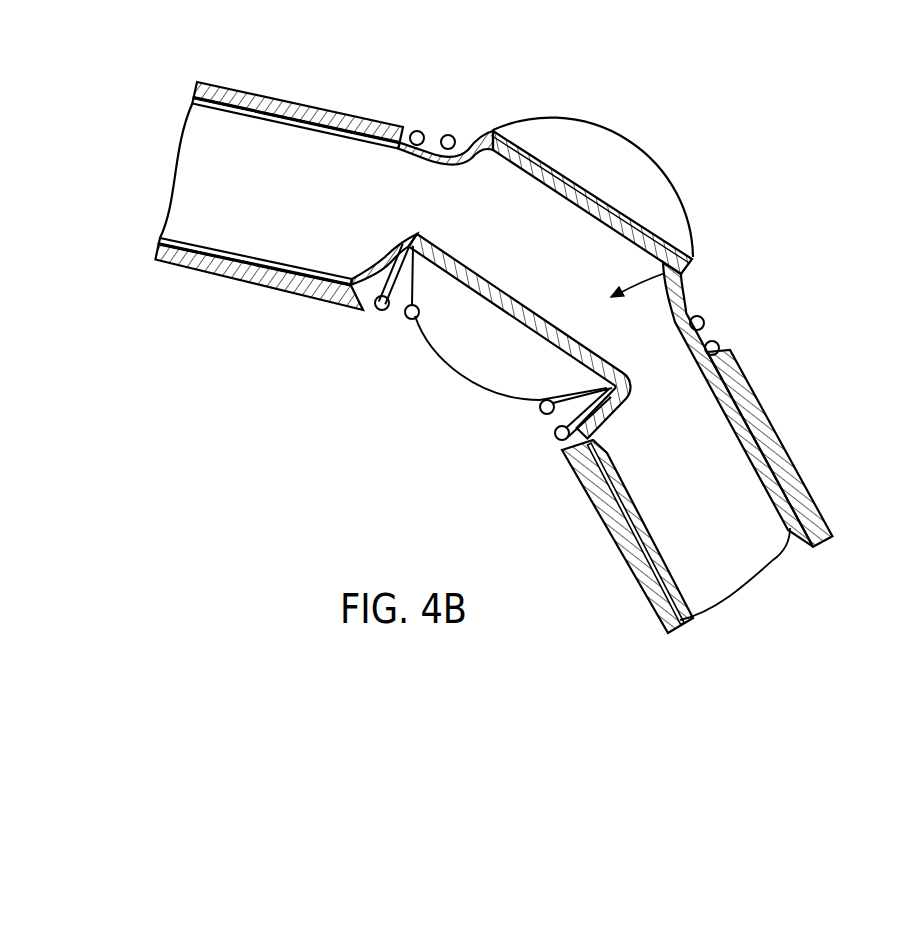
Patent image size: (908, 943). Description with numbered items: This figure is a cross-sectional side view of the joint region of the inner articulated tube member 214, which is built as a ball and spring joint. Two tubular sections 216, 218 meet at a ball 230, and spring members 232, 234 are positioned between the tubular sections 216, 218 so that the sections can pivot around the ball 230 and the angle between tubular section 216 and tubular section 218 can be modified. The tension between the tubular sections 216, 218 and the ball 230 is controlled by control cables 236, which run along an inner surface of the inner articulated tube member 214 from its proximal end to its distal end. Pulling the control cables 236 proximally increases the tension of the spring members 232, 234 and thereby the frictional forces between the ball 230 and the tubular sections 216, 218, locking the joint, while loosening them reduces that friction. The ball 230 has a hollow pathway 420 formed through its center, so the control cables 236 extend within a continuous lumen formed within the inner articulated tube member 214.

The inner articulated tube member 214 is at (759, 142).
The tubular section 216 is at (291, 101).
The tubular section 218 is at (780, 443).
The ball 230 is at (630, 138).
The spring member 232 is at (425, 127).
The spring member 234 is at (705, 318).
The control cables 236 is at (680, 592).
The hollow pathway 420 is at (683, 258).